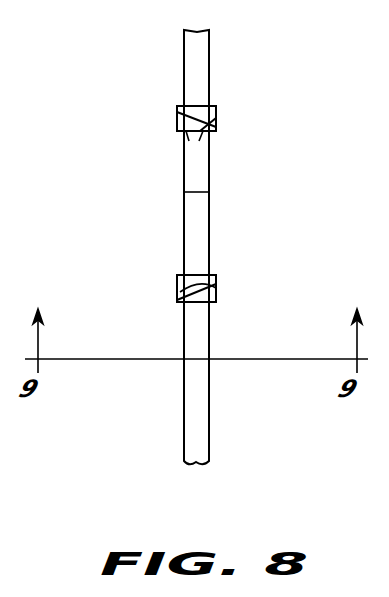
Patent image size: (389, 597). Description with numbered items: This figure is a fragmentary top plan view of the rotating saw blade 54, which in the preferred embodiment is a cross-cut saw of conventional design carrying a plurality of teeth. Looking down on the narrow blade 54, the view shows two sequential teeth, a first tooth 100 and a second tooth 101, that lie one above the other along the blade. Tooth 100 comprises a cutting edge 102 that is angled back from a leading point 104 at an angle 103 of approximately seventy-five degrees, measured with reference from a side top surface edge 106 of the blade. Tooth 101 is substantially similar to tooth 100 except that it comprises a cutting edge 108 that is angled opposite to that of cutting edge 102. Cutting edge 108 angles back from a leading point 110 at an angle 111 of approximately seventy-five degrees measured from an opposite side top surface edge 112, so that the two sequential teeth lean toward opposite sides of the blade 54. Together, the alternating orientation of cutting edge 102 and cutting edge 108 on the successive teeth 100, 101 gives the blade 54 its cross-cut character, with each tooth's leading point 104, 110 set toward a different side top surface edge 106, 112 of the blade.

The blade 54 is at (222, 86).
The tooth 100 is at (170, 285).
The tooth 101 is at (170, 113).
The cutting edge 102 is at (210, 302).
The angle 103 is at (217, 280).
The leading point 104 is at (174, 318).
The side top surface edge 106 is at (178, 297).
The cutting edge 108 is at (183, 137).
The leading point 110 is at (221, 143).
The angle 111 is at (178, 110).
The opposite side top surface edge 112 is at (218, 106).